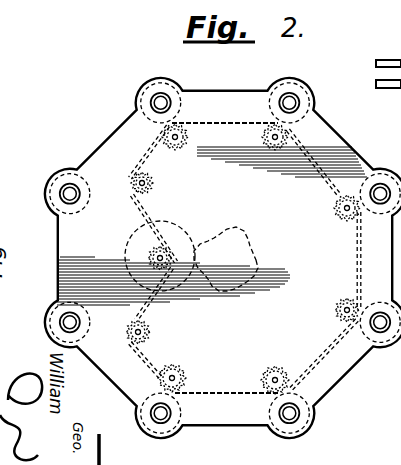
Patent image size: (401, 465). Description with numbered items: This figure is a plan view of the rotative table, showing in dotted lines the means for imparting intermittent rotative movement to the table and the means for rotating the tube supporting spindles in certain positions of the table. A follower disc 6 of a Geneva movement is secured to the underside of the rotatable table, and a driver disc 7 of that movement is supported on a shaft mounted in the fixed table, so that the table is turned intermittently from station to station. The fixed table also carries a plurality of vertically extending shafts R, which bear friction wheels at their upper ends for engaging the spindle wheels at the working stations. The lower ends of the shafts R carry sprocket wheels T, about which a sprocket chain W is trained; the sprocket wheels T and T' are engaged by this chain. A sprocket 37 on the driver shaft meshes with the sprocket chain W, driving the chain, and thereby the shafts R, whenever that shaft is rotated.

The follower disc 6 is at (249, 249).
The driver disc 7 is at (180, 233).
The sprocket 37 is at (128, 286).
The sprocket wheels T is at (173, 360).
The tension sprocket T' is at (331, 225).
The vertically extending shafts R is at (244, 369).
The sprocket chain W is at (230, 390).